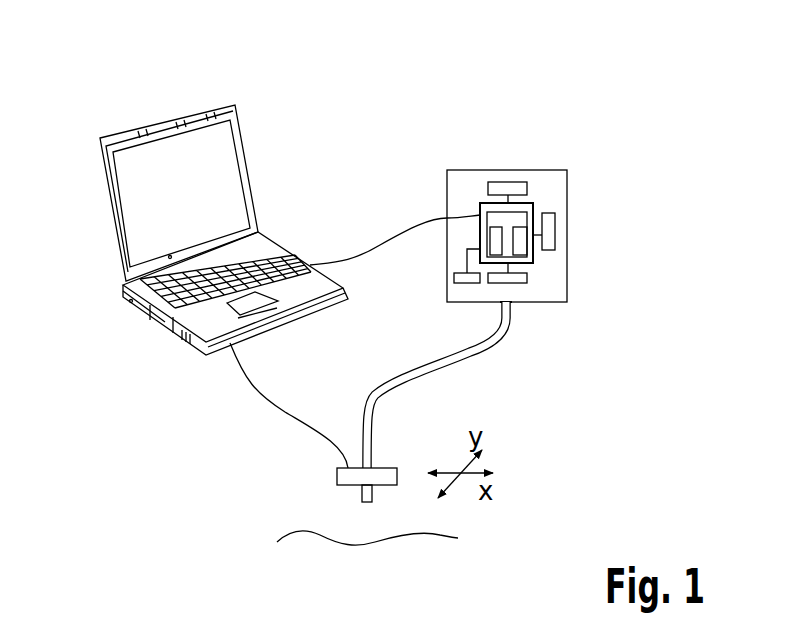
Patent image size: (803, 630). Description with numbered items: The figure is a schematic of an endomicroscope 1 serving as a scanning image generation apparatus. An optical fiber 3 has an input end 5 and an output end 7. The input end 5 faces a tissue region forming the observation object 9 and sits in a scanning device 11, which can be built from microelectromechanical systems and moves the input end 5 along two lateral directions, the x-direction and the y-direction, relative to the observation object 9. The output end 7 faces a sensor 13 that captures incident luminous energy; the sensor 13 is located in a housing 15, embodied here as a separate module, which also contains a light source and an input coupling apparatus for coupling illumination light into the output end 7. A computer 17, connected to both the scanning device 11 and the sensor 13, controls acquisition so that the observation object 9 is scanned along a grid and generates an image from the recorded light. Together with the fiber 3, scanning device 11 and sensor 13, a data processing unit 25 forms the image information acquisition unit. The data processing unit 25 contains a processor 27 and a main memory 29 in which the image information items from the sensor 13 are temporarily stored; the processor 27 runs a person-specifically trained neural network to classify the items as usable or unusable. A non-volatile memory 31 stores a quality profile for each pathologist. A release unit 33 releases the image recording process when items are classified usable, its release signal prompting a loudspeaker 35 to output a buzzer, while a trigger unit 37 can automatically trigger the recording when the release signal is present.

The endomicroscope 1 is at (607, 375).
The optical fiber 3 is at (478, 355).
The input end 5 is at (365, 505).
The output end 7 is at (520, 302).
The observation object 9 is at (293, 533).
The scanning device 11 is at (337, 477).
The sensor 13 is at (527, 277).
The housing 15 is at (542, 170).
The computer 17 is at (165, 92).
The data processing unit 25 is at (533, 210).
The processor 27 is at (527, 250).
The main memory 29 is at (490, 233).
The non-volatile memory 31 is at (555, 232).
The release unit 33 is at (480, 213).
The loudspeaker 35 is at (505, 182).
The trigger unit 37 is at (457, 277).